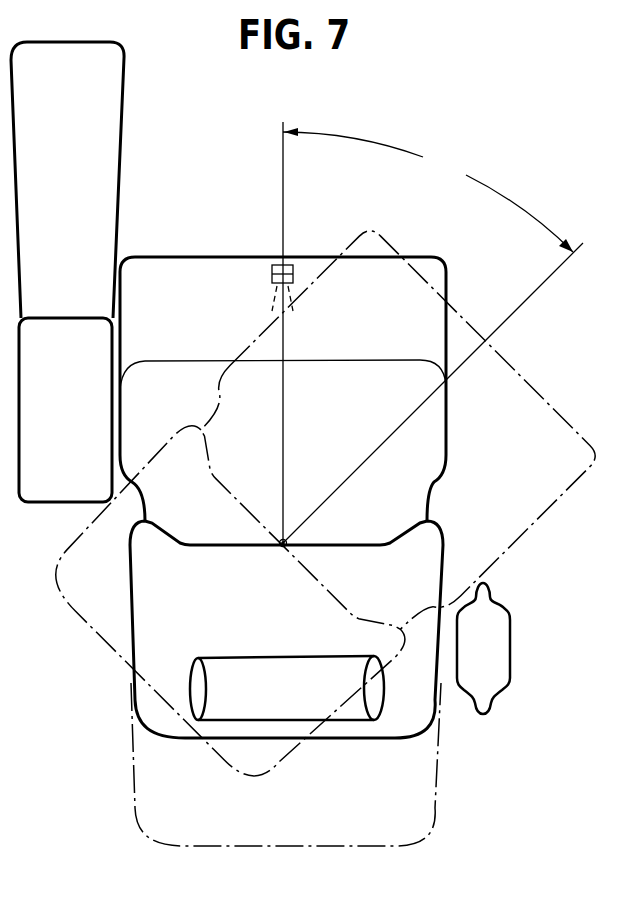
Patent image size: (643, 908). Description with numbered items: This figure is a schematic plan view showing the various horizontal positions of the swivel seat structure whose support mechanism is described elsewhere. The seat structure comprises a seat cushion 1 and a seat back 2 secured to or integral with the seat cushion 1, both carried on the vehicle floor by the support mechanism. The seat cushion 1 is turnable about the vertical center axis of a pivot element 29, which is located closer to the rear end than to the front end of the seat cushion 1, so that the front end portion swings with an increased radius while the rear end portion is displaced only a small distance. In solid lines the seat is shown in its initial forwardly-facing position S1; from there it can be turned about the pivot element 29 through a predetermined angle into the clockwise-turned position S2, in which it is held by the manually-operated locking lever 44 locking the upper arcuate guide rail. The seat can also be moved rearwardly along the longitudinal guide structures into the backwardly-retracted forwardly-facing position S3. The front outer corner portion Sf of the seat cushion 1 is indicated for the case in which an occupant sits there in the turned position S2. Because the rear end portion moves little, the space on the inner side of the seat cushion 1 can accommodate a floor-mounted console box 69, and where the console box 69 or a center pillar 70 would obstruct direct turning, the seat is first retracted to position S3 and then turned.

The seat cushion 1 is at (299, 370).
The seat back 2 is at (453, 543).
The pivot element 29 is at (286, 539).
The locking lever 44 is at (270, 268).
The floor-mounted console box 69 is at (127, 167).
The center pillar 70 is at (467, 694).
The initial forwardly-facing position S1 is at (192, 257).
The clockwise-turned position S2 is at (526, 382).
The backwardly-retracted forwardly-facing position S3 is at (134, 782).
The front outer corner portion Sf is at (428, 265).